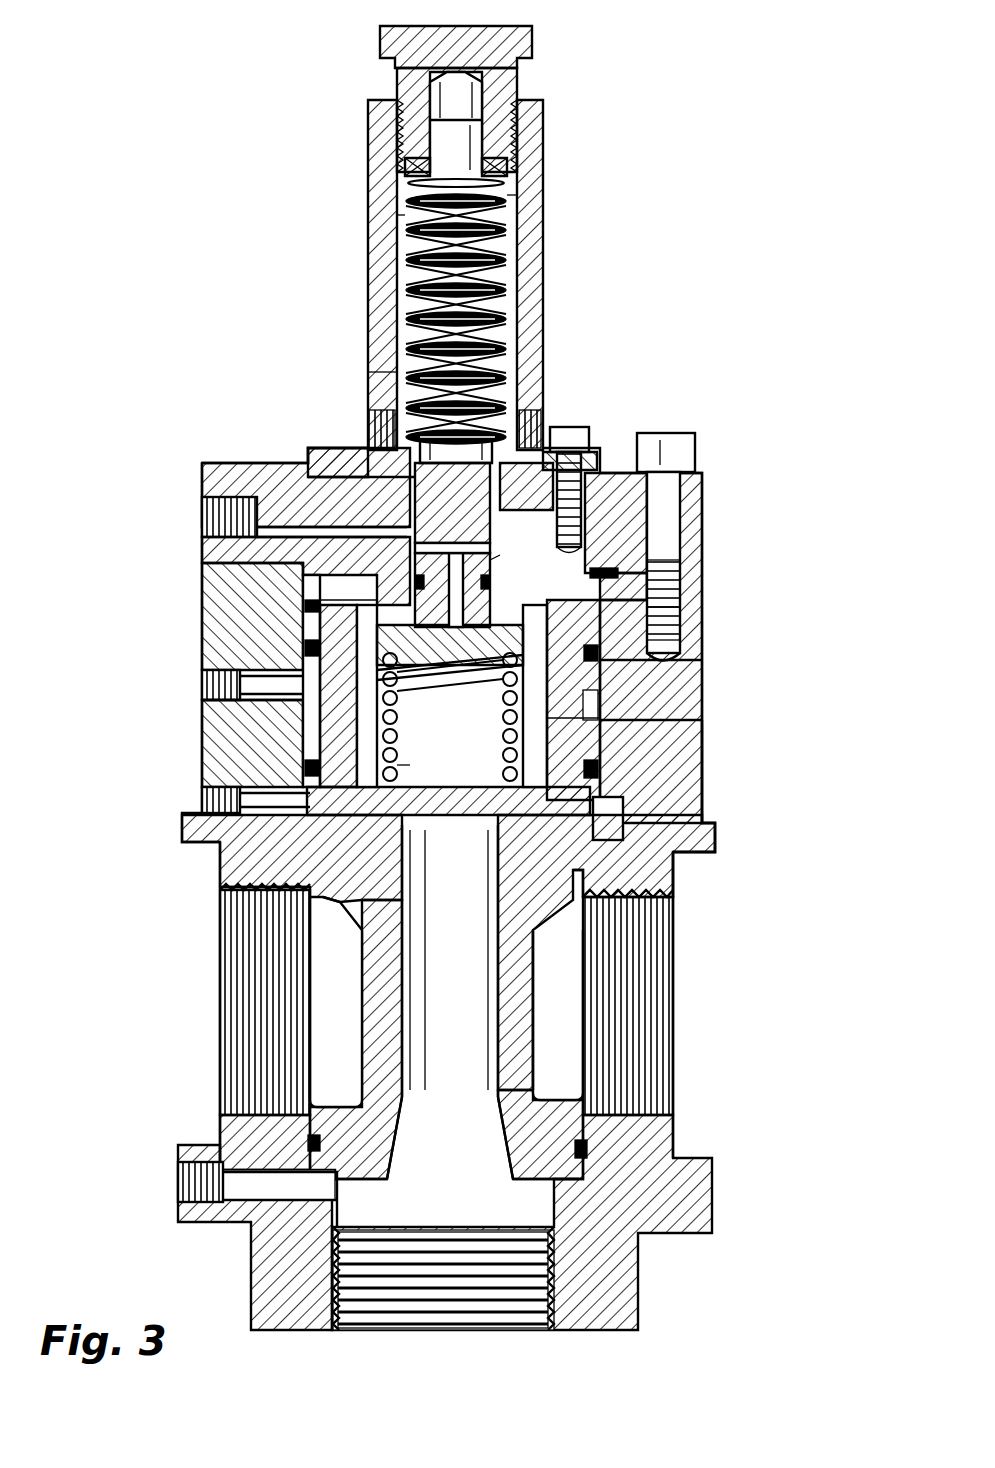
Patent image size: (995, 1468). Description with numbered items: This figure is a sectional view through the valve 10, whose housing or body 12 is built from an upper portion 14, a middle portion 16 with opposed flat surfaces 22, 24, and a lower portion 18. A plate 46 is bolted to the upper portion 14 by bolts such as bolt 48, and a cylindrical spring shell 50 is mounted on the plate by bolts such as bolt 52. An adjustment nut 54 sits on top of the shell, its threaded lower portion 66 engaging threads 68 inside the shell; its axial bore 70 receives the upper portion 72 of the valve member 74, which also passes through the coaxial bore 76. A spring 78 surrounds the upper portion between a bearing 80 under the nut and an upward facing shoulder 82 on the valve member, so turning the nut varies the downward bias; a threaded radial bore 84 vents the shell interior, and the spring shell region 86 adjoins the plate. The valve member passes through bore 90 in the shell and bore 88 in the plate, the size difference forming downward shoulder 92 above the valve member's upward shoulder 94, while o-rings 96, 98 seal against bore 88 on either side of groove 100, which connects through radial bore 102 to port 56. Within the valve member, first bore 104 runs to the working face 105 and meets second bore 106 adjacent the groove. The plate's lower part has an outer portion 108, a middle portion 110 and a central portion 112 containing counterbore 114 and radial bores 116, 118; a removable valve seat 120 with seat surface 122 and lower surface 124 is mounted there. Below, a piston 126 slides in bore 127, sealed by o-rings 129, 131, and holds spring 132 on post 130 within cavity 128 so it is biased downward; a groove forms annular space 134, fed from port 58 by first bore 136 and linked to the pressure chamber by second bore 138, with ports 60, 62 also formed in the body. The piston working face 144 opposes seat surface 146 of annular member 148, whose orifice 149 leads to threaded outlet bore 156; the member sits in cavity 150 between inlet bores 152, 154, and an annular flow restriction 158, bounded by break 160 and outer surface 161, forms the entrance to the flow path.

The valve 10 is at (242, 408).
The housing or body 12 is at (703, 781).
The upper portion 14 is at (704, 600).
The middle portion 16 is at (716, 838).
The lower portion 18 is at (640, 1290).
The flat surface 22 is at (217, 856).
The flat surface 24 is at (676, 886).
The plate 46 is at (704, 492).
The bolt 48 is at (682, 450).
The spring shell 50 is at (545, 231).
The bolt 52 is at (570, 428).
The adjustment nut 54 is at (535, 45).
The port 56 is at (257, 520).
The port 58 is at (240, 690).
The port 60 is at (222, 800).
The port 62 is at (185, 1188).
The cylindrical threaded lower portion 66 is at (396, 82).
The threads 68 is at (507, 196).
The axial bore 70 is at (470, 100).
The upper portion 72 is at (472, 150).
The valve member 74 is at (560, 448).
The coaxial bore 76 is at (504, 284).
The spring 78 is at (400, 216).
The bearing 80 is at (402, 165).
The annular shoulder 82 is at (388, 371).
The threaded radial bore 84 is at (384, 420).
The flange plate 86 is at (326, 450).
The bore 88 is at (414, 516).
The bore 90 is at (472, 440).
The annular shoulder 92 is at (344, 460).
The annular shoulder 94 is at (590, 460).
The o-ring 96 is at (582, 524).
The o-ring 98 is at (492, 575).
The annular cavity or groove 100 is at (496, 548).
The radial bore 102 is at (300, 470).
The first bore 104 is at (430, 615).
The working face 105 is at (305, 650).
The second bore 106 is at (402, 577).
The radially outer annular portion 108 is at (300, 570).
The annular middle portion 110 is at (375, 598).
The circular central portion 112 is at (598, 660).
The counterbore 114 is at (598, 702).
The radial bore 116 is at (303, 632).
The radial bore 118 is at (682, 610).
The valve seat 120 is at (408, 698).
The seat surface 122 is at (590, 568).
The downwardly facing surface 124 is at (598, 736).
The piston 126 is at (622, 812).
The radial bore 127 is at (704, 720).
The cavity or annular opening 128 is at (512, 795).
The o-ring 129 is at (662, 664).
The post 130 is at (480, 752).
The o-ring 131 is at (598, 776).
The spring 132 is at (402, 766).
The annular space 134 is at (300, 715).
The first bore 136 is at (222, 702).
The second bore 138 is at (303, 752).
The working face 144 is at (256, 858).
The seat surface 146 is at (536, 882).
The annular member 148 is at (540, 932).
The axial orifice 149 is at (480, 1030).
The cylindrical cavity 150 is at (330, 905).
The threaded inlet bore 152 is at (255, 1050).
The threaded inlet bore 154 is at (652, 1076).
The threaded outlet bore 156 is at (475, 1300).
The annular flow restriction 158 is at (586, 882).
The break 160 is at (328, 895).
The radially outer surface 161 is at (676, 912).